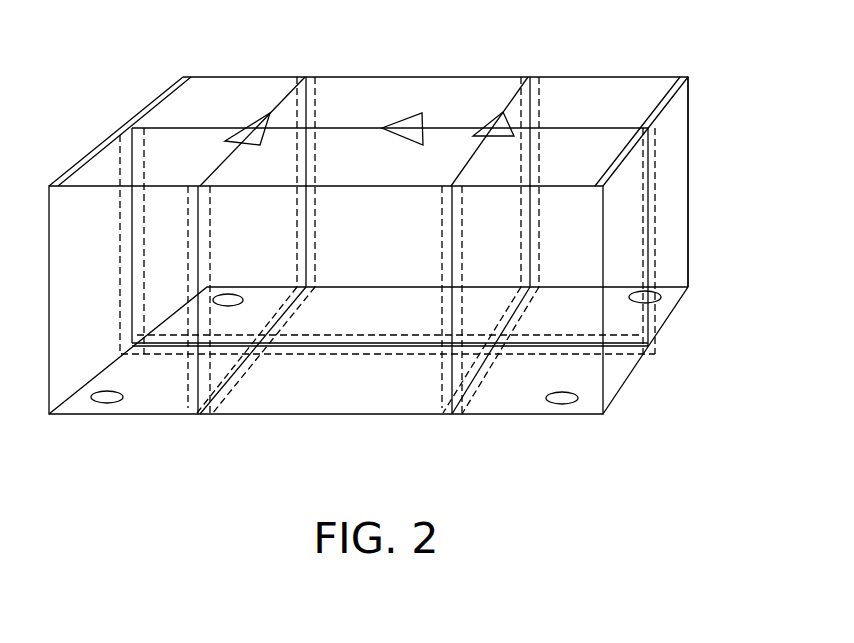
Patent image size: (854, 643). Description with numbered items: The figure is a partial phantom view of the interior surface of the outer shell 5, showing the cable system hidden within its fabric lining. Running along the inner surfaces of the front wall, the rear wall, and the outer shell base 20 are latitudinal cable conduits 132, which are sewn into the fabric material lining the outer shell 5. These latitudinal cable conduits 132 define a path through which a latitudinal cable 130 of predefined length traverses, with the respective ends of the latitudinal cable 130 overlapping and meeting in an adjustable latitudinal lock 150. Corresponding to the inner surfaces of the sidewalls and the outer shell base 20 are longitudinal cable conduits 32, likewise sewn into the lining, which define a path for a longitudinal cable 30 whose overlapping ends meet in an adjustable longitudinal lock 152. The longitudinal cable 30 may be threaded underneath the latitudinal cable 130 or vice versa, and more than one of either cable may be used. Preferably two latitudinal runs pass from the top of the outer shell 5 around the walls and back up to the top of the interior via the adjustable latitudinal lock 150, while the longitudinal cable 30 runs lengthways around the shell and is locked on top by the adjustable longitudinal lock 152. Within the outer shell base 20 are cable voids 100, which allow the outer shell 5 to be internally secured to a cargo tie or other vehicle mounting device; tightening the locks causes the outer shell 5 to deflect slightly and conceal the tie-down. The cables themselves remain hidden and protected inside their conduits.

The outer shell 5 is at (112, 132).
The outer shell base 20 is at (337, 384).
The longitudinal cable 30 is at (655, 222).
The longitudinal cable conduits 32 is at (337, 125).
The cable voids 100 is at (102, 400).
The latitudinal cable 130 is at (208, 395).
The latitudinal cable conduits 132 is at (287, 93).
The adjustable latitudinal lock 150 is at (262, 118).
The adjustable longitudinal lock 152 is at (407, 125).